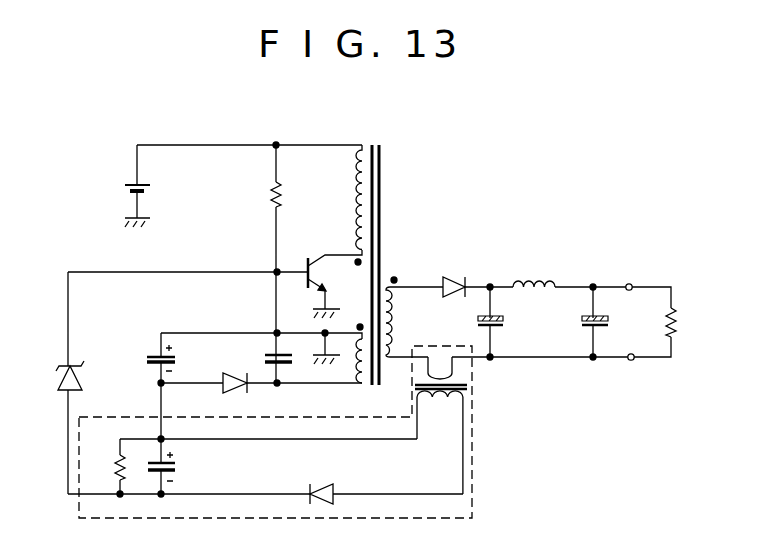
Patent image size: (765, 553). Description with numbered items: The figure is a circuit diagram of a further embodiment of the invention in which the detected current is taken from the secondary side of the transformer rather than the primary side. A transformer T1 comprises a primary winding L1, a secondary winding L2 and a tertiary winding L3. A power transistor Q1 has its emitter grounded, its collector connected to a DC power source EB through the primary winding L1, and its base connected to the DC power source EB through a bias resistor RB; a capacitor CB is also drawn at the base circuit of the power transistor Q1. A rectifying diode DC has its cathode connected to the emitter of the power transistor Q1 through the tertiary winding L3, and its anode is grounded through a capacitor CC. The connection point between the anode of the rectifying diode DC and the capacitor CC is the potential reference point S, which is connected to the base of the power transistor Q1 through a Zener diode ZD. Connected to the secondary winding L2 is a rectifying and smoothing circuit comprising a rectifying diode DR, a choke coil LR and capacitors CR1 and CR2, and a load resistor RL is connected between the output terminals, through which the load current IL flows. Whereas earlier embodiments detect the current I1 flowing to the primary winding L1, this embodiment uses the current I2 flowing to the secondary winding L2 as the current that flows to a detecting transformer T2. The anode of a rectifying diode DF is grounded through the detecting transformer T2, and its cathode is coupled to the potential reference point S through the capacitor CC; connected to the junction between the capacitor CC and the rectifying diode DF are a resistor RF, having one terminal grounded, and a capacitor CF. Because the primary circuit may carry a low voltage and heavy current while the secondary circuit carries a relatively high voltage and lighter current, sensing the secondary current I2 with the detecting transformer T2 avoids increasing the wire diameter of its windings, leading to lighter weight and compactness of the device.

The DC power source EB is at (155, 192).
The bias resistor RB is at (259, 198).
The current flowing to the primary winding I1 is at (338, 130).
The transformer T1 is at (376, 140).
The primary winding L1 is at (343, 205).
The power transistor Q1 is at (313, 258).
The secondary winding L2 is at (404, 317).
The tertiary winding L3 is at (355, 373).
The current flowing to the secondary circuit I2 is at (426, 270).
The rectifying diode DR is at (459, 267).
The choke coil LR is at (534, 265).
The capacitor CR1 is at (510, 322).
The capacitor CR2 is at (610, 322).
The load current IL is at (656, 268).
The load resistor RL is at (688, 326).
The detecting transformer T2 is at (459, 425).
The capacitor CC is at (177, 358).
The base capacitor CB is at (261, 355).
The rectifying diode DC is at (252, 395).
The potential reference point S is at (161, 383).
The Zener diode ZD is at (55, 384).
The resistor RF is at (104, 475).
The capacitor CF is at (176, 466).
The rectifying diode DF is at (338, 480).